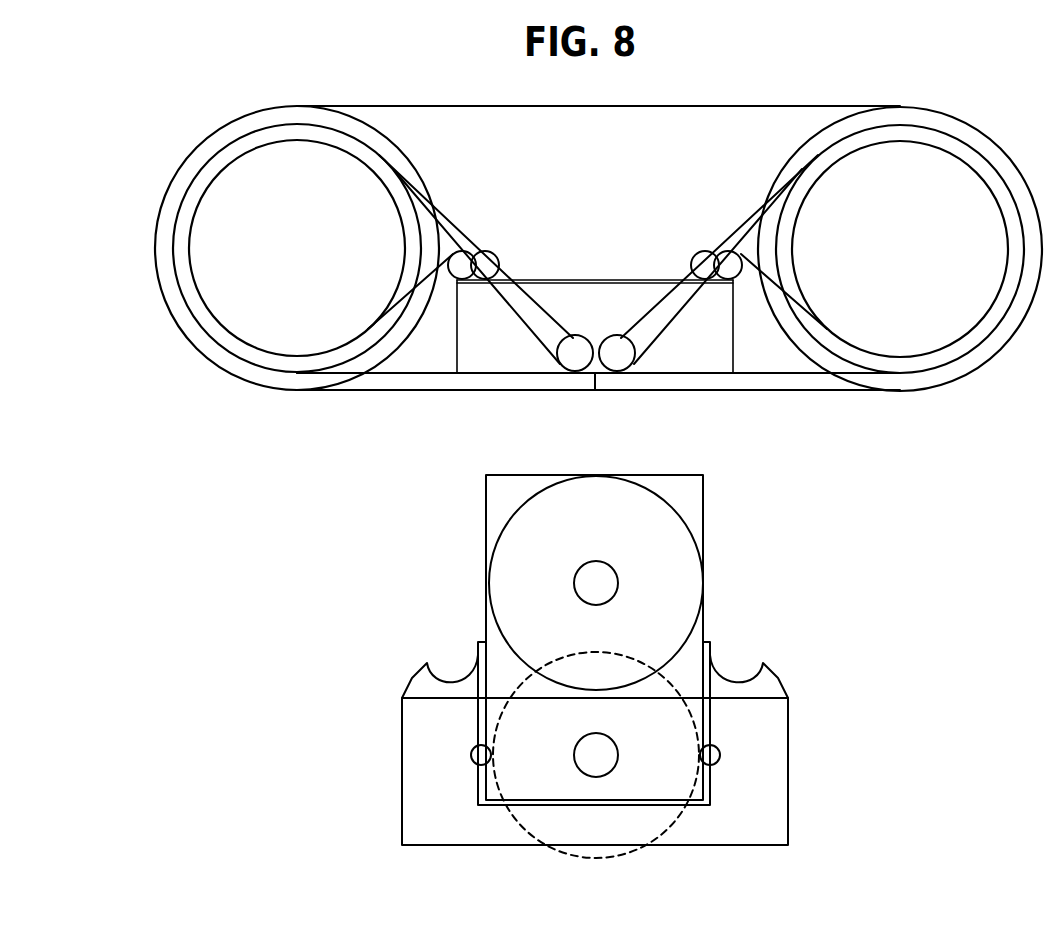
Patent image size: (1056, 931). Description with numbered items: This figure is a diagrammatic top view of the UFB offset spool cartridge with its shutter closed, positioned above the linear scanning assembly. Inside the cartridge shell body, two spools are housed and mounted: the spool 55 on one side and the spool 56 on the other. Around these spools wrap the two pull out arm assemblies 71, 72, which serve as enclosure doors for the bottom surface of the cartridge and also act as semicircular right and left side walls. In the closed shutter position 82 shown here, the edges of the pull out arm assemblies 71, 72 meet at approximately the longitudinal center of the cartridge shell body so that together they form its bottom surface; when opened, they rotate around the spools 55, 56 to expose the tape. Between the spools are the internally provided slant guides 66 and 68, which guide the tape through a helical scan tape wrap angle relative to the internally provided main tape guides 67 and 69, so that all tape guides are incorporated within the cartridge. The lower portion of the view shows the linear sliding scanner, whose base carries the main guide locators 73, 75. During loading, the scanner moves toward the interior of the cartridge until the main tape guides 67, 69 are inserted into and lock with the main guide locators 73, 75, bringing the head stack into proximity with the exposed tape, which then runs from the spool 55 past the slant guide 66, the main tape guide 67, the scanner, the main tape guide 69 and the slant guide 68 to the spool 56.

The spool 55 is at (270, 303).
The spool 56 is at (948, 300).
The slant guide 66 is at (482, 249).
The main tape guide 67 is at (550, 347).
The slant guide 68 is at (698, 249).
The main tape guide 69 is at (640, 350).
The pull out arm assembly 71 is at (391, 376).
The pull out arm assembly 72 is at (753, 376).
The main guide locator 73 is at (450, 655).
The main guide locator 75 is at (740, 655).
The closed shutter position 82 is at (601, 278).